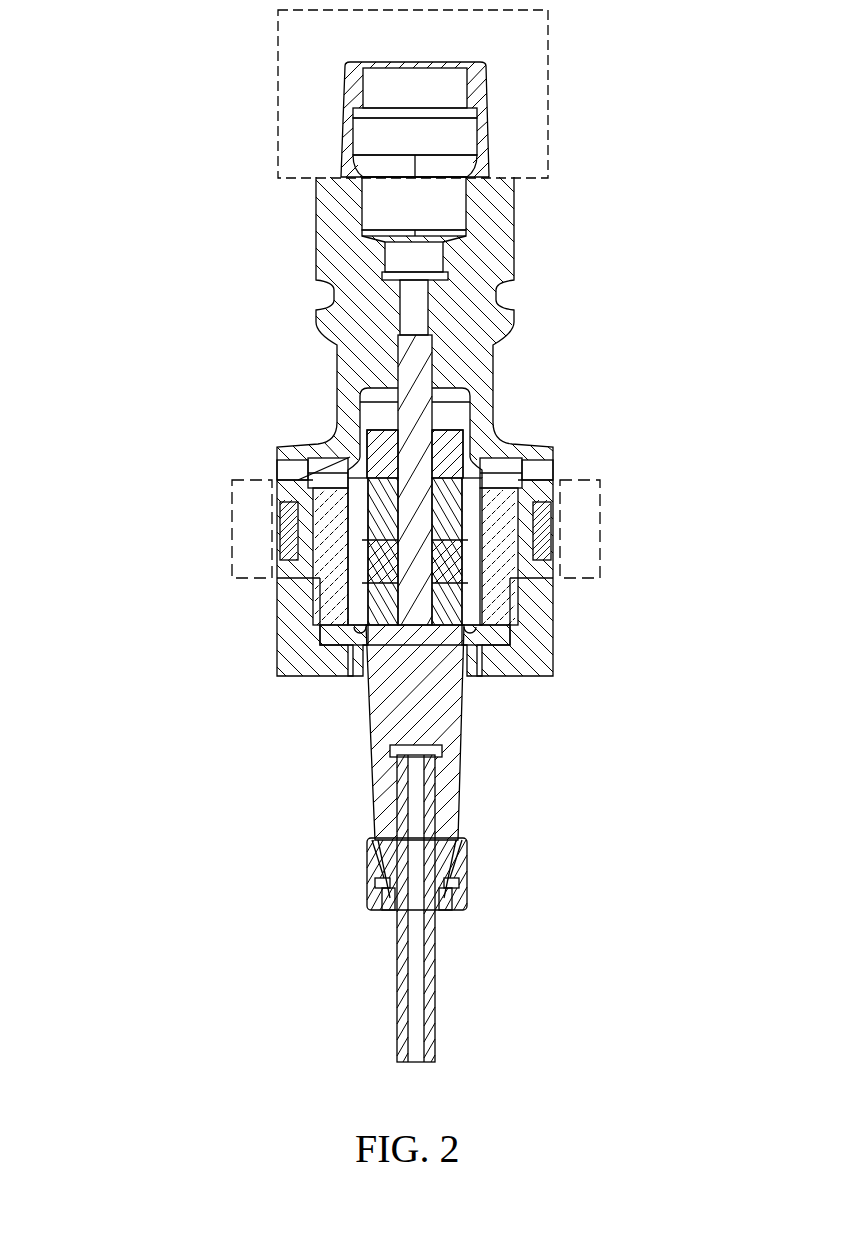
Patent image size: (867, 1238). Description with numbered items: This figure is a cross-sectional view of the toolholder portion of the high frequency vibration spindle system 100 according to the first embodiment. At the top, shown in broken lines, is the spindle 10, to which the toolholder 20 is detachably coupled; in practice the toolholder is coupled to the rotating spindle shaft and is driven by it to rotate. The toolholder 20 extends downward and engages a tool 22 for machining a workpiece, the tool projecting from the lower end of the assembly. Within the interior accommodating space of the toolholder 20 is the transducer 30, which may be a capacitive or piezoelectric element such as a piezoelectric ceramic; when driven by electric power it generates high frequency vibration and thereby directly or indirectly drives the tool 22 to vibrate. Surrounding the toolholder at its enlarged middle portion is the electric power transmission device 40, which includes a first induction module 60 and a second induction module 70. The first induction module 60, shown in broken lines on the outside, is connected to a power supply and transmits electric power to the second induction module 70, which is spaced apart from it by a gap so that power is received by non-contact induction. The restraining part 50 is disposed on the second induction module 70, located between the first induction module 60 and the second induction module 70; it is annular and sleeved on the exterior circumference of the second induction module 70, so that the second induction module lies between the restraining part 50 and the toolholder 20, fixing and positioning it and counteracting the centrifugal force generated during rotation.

The high frequency vibration spindle system 100 is at (180, 128).
The spindle 10 is at (551, 63).
The toolholder 20 is at (517, 248).
The tool 22 is at (436, 977).
The transducer 30 is at (462, 532).
The electric power transmission device 40 is at (492, 564).
The restraining part 50 is at (274, 460).
The first induction module 60 is at (590, 535).
The second induction module 70 is at (695, 505).